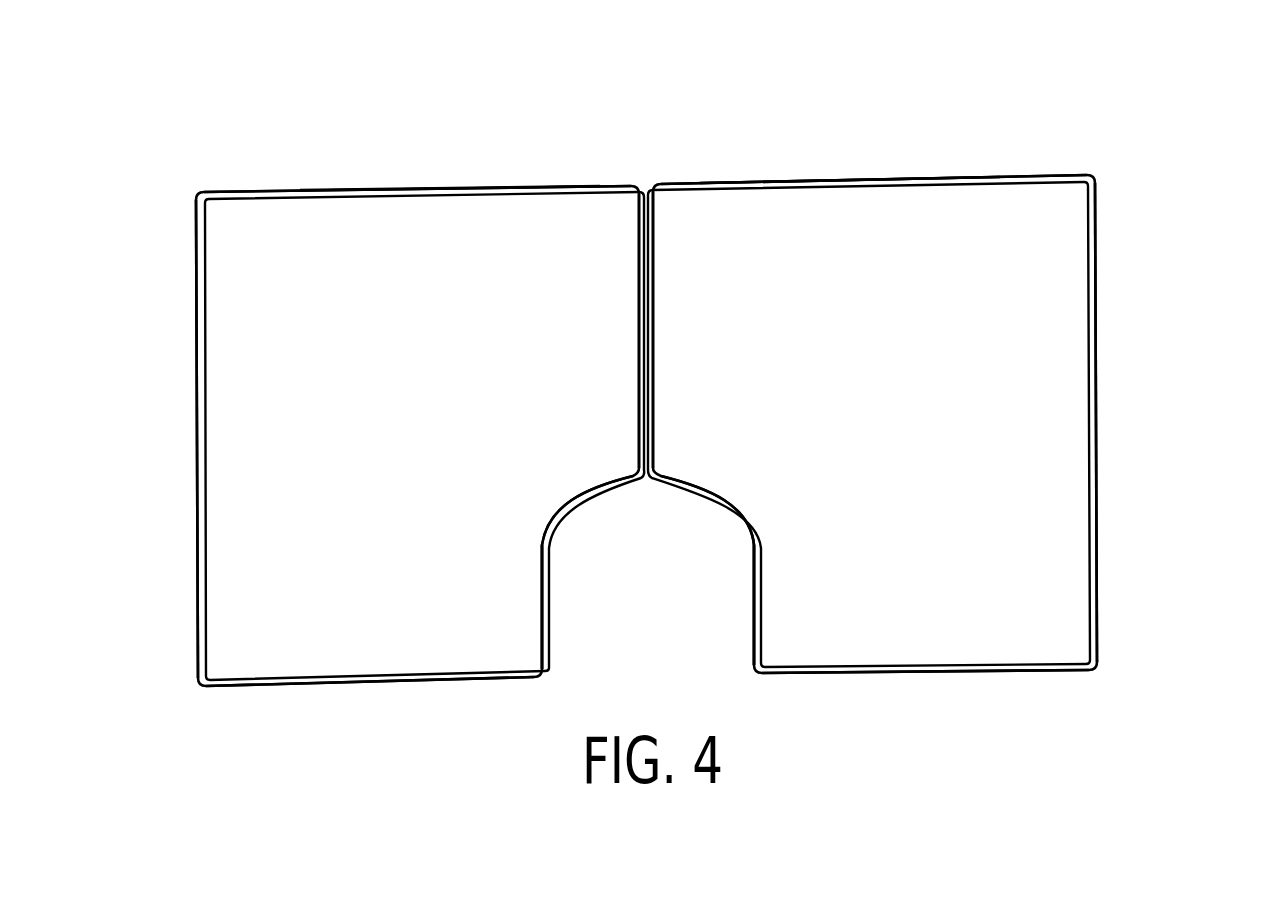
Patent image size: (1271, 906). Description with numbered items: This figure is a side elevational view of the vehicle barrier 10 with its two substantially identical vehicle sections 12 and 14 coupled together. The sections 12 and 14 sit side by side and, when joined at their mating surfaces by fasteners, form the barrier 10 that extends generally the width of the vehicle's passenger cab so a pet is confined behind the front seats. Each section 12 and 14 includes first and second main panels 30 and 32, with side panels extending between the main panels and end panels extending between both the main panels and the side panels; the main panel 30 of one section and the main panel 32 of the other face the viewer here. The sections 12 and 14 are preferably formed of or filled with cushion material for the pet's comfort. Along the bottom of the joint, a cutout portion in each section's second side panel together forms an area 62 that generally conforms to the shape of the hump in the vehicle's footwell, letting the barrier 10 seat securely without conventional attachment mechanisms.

The vehicle barrier 10 is at (960, 143).
The first vehicle section 12 is at (313, 190).
The second vehicle section 14 is at (725, 182).
The first main panel 30 is at (438, 370).
The second main panel 32 is at (868, 352).
The area 62 is at (588, 634).